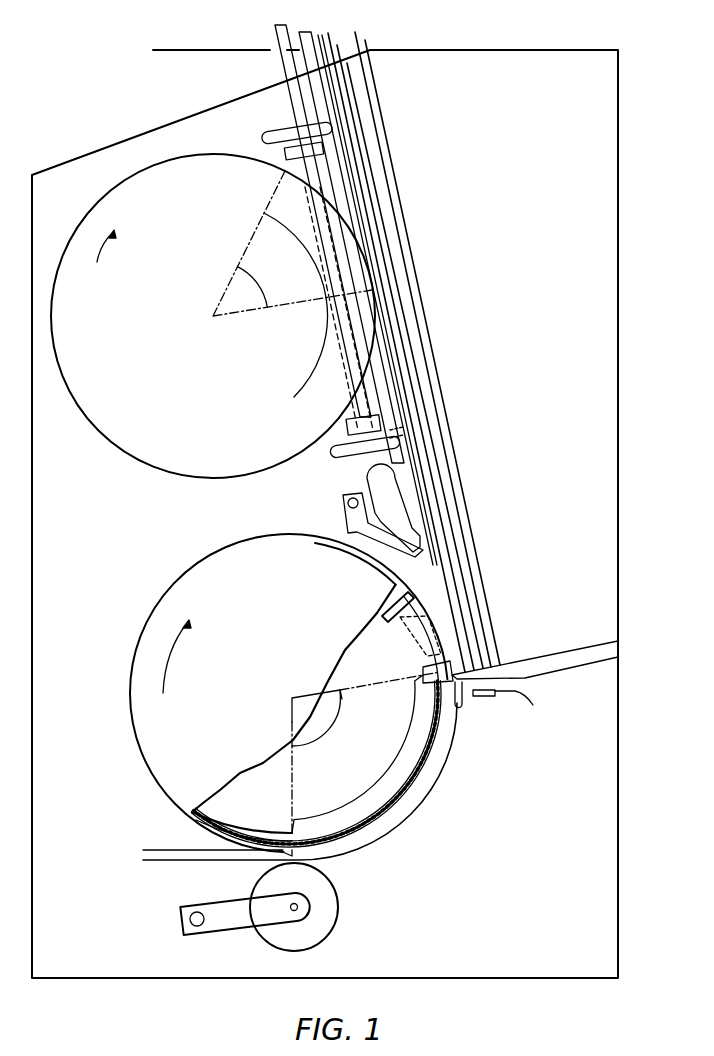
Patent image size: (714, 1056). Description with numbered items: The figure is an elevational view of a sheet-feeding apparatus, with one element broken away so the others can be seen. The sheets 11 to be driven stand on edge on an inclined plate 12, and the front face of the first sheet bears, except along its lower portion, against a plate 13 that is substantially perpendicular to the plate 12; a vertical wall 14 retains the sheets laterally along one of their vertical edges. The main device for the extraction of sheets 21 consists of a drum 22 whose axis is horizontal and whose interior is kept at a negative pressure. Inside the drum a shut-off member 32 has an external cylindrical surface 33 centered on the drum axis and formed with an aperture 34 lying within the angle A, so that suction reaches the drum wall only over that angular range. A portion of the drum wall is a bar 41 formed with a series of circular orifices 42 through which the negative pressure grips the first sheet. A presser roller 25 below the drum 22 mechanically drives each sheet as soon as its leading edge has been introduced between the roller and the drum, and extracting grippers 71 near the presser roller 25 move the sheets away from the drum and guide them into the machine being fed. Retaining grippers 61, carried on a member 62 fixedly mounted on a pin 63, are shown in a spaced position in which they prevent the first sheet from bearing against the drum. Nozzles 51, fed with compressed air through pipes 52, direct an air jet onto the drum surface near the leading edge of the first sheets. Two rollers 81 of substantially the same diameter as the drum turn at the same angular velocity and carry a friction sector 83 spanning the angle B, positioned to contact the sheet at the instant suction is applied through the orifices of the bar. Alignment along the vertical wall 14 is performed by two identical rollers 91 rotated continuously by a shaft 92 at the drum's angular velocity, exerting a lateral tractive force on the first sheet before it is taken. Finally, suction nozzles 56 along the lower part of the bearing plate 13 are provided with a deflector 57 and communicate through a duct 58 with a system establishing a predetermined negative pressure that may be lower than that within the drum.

The sheets 11 is at (385, 167).
The inclined plate 12 is at (556, 663).
The plate 13 is at (310, 42).
The vertical wall 14 is at (176, 62).
The main device for the extraction of sheets 21 is at (170, 591).
The drum 22 is at (415, 783).
The presser roller 25 is at (320, 913).
The shut-off member 32 is at (373, 763).
The external cylindrical surface 33 is at (233, 818).
The aperture 34 is at (350, 803).
The bar 41 is at (437, 668).
The circular orifices 42 is at (433, 657).
The nozzles 51 is at (487, 694).
The pipes 52 is at (519, 699).
The suction nozzles 56 is at (423, 518).
The deflector 57 is at (423, 553).
The duct 58 is at (382, 480).
The retaining grippers 61 is at (420, 585).
The member 62 is at (358, 528).
The pin 63 is at (347, 498).
The extracting grippers 71 is at (182, 855).
The rollers 81 is at (200, 178).
The sector 83 is at (282, 207).
The rollers 91 is at (283, 132).
The shaft 92 is at (285, 76).